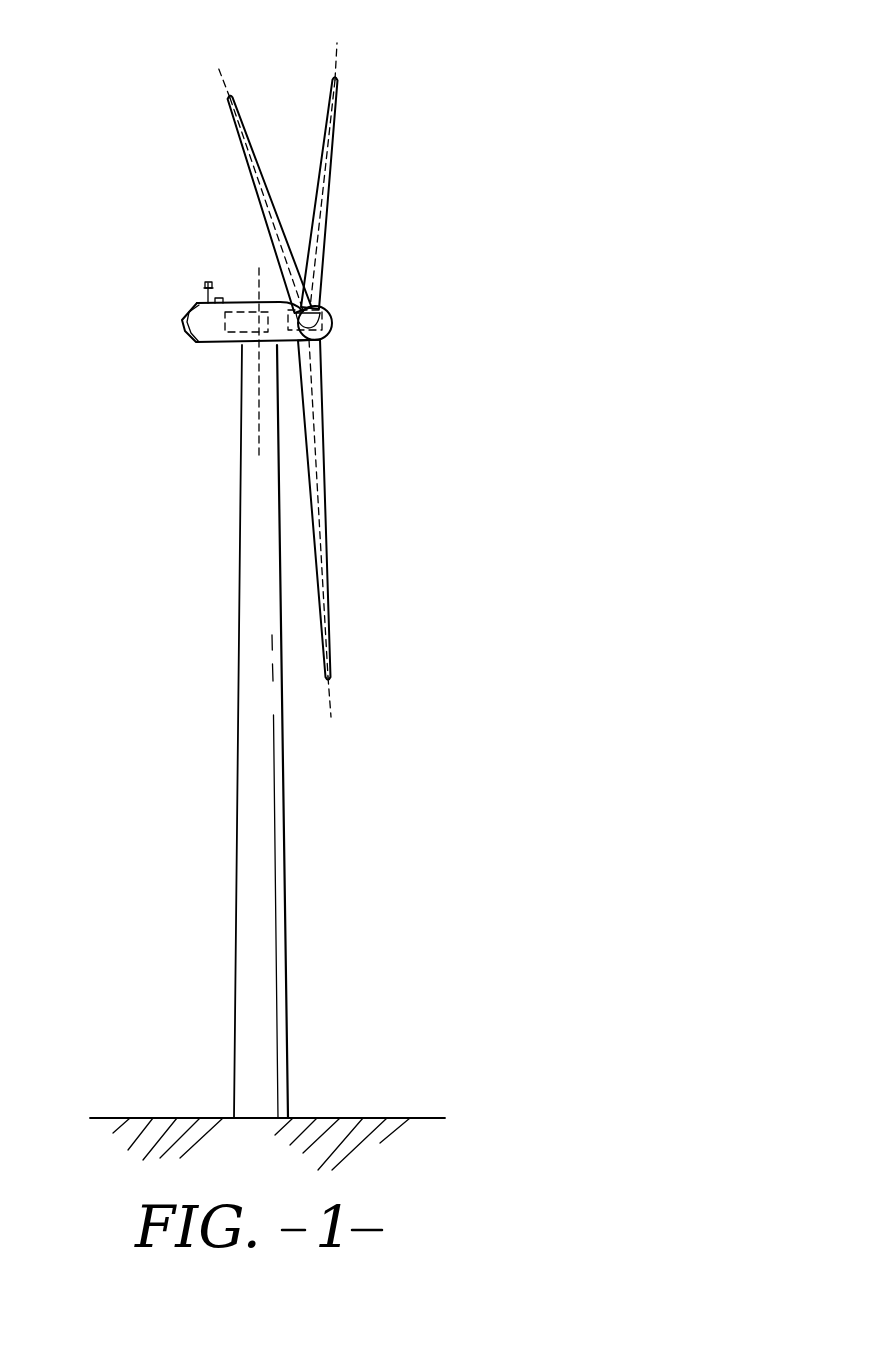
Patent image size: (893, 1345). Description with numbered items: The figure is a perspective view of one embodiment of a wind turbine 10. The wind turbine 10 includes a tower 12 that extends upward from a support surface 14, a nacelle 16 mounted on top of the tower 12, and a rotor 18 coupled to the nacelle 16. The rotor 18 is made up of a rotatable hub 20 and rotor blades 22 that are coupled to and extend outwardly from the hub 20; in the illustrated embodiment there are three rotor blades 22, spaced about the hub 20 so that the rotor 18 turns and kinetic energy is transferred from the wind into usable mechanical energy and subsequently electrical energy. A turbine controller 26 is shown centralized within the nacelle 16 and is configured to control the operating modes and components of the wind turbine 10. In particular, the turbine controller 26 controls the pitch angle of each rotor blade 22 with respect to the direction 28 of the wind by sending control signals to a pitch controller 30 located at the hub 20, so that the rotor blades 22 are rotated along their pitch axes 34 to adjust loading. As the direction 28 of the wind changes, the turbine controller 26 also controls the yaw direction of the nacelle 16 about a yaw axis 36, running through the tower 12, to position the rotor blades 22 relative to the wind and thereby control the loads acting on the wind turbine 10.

The wind turbine 10 is at (460, 113).
The tower 12 is at (248, 837).
The support surface 14 is at (167, 1118).
The nacelle 16 is at (222, 345).
The rotor 18 is at (287, 384).
The rotatable hub 20 is at (331, 327).
The rotor blade 22 is at (267, 183).
The turbine controller 26 is at (238, 308).
The direction of the wind 28 is at (462, 310).
The pitch controller 30 is at (331, 313).
The pitch axis 34 is at (223, 85).
The yaw axis 36 is at (259, 400).